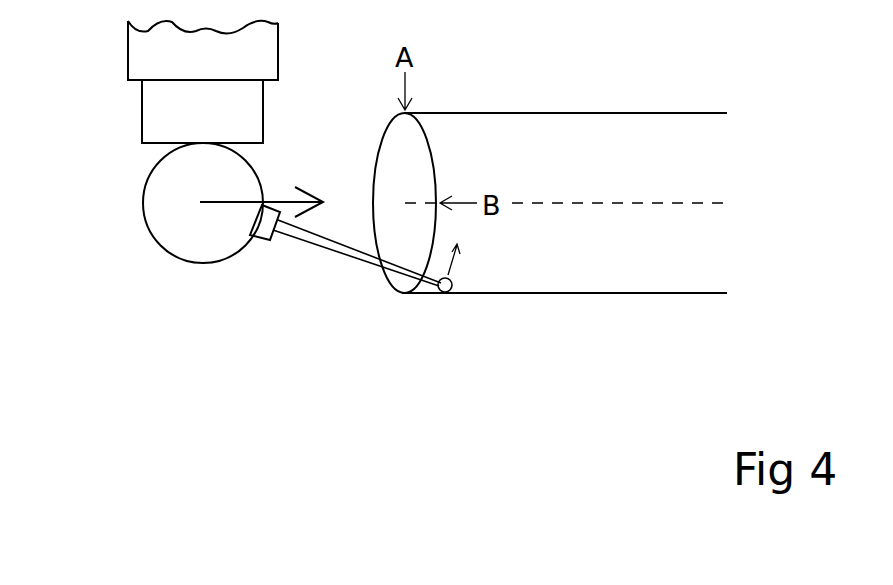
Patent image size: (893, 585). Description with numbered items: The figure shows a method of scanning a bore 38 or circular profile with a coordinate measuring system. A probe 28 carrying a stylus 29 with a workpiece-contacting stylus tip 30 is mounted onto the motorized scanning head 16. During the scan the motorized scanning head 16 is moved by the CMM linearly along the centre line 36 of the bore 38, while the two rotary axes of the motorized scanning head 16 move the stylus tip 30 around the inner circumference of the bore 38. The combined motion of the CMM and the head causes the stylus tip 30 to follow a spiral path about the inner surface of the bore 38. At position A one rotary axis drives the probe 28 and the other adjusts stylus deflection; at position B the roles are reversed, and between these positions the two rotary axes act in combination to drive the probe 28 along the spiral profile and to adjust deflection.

The motorized scanning head 16 is at (140, 154).
The probe 28 is at (260, 242).
The stylus 29 is at (327, 252).
The stylus tip 30 is at (446, 293).
The centre line 36 is at (633, 203).
The bore 38 is at (535, 128).